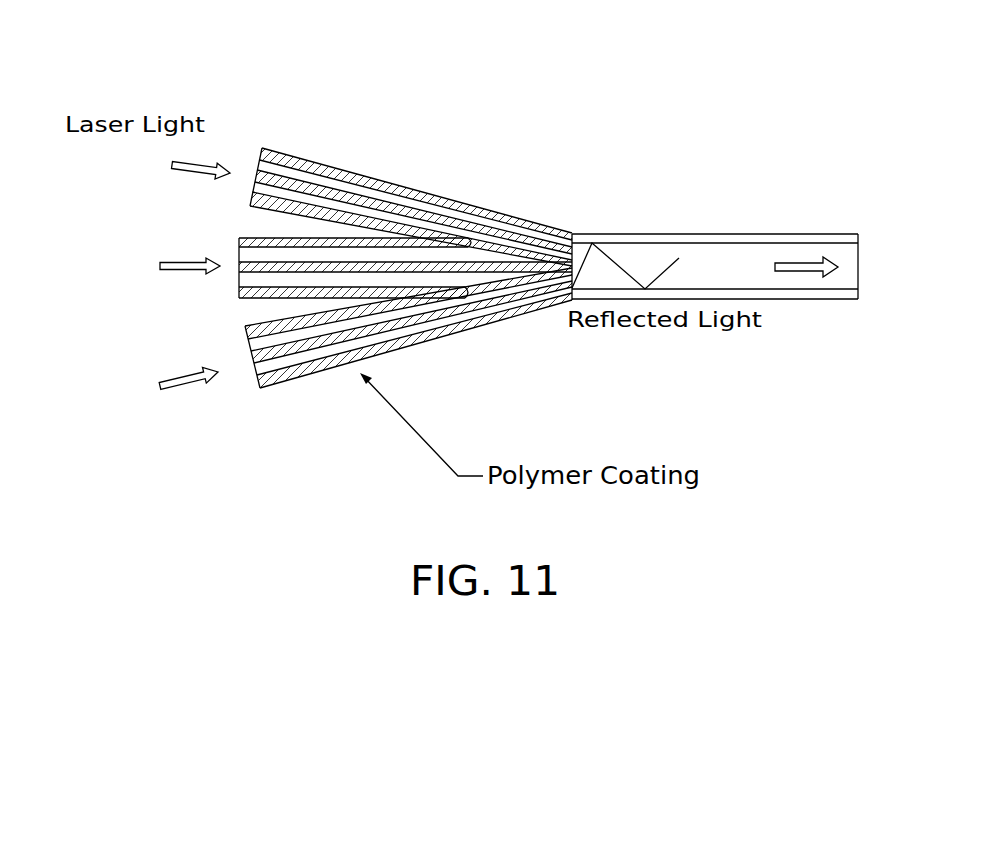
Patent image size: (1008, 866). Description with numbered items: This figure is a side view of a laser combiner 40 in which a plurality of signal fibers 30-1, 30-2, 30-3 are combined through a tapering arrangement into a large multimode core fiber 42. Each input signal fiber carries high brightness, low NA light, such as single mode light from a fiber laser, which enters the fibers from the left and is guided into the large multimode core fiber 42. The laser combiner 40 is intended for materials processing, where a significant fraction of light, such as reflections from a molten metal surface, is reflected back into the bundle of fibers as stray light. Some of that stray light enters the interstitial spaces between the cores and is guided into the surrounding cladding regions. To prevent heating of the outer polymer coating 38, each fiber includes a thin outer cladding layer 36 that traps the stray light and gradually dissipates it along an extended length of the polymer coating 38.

The laser combiner 40 is at (562, 78).
The outer polymer coating 38 is at (270, 148).
The signal fiber 30-1 is at (470, 143).
The signal fiber 30-2 is at (184, 358).
The signal fiber 30-3 is at (365, 471).
The outer cladding layer 36 is at (489, 207).
The large multimode core fiber 42 is at (731, 238).